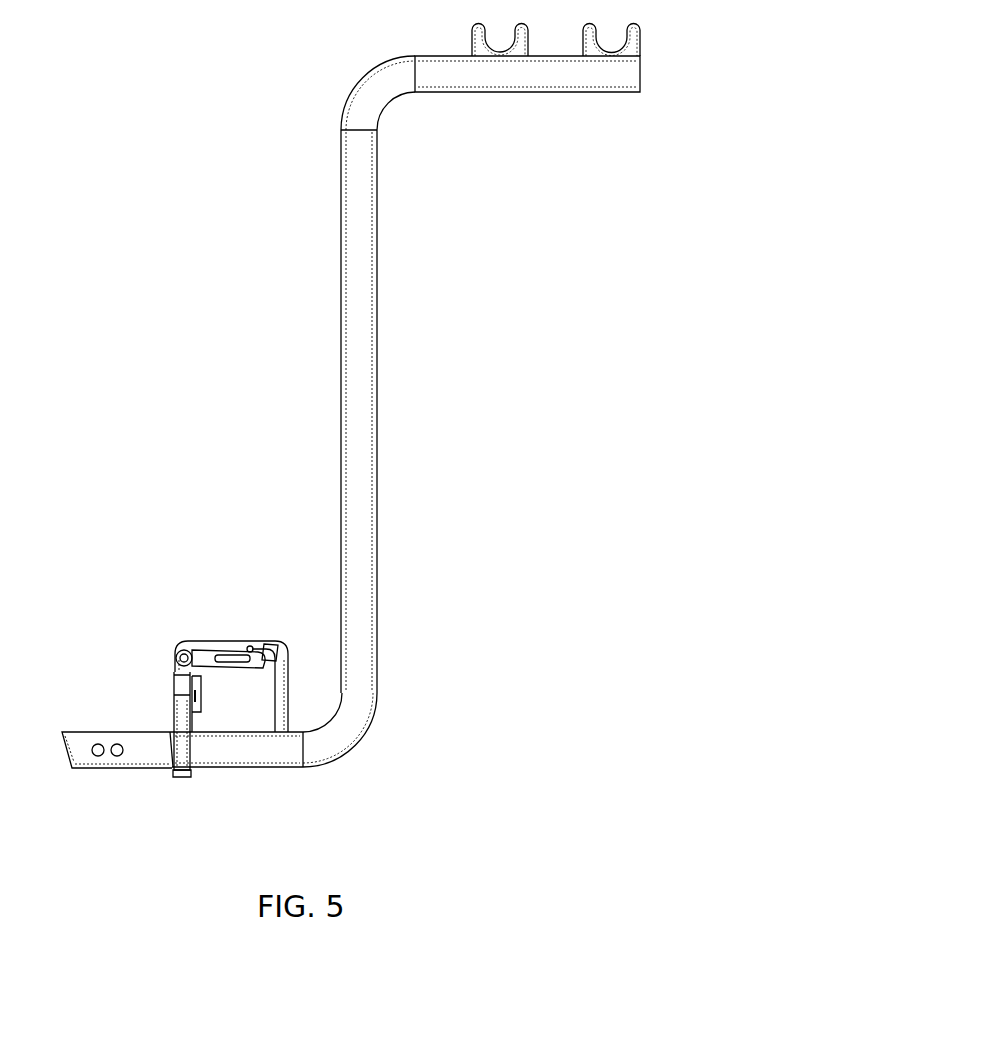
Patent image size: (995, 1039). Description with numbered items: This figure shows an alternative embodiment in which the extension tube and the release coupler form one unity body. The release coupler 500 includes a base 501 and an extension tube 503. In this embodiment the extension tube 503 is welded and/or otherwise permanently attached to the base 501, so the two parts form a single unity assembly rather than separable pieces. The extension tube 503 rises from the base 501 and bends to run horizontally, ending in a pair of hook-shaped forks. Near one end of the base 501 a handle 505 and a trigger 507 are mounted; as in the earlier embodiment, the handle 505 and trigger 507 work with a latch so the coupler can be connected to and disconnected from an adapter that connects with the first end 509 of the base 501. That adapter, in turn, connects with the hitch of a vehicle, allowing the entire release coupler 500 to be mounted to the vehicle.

The release coupler 500 is at (346, 447).
The base 501 is at (240, 768).
The extension tube 503 is at (376, 591).
The handle 505 is at (260, 633).
The trigger 507 is at (215, 645).
The first end 509 is at (110, 763).